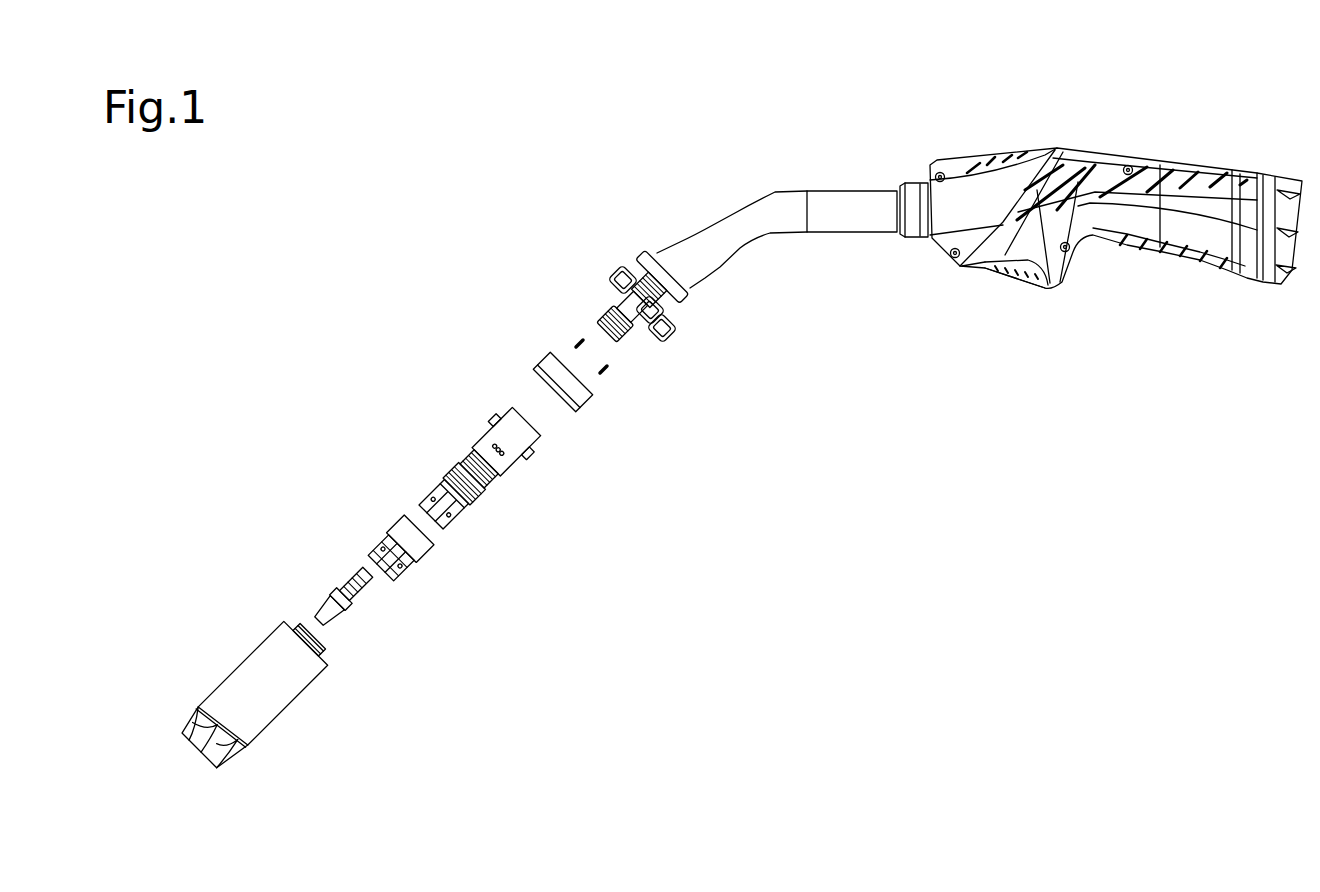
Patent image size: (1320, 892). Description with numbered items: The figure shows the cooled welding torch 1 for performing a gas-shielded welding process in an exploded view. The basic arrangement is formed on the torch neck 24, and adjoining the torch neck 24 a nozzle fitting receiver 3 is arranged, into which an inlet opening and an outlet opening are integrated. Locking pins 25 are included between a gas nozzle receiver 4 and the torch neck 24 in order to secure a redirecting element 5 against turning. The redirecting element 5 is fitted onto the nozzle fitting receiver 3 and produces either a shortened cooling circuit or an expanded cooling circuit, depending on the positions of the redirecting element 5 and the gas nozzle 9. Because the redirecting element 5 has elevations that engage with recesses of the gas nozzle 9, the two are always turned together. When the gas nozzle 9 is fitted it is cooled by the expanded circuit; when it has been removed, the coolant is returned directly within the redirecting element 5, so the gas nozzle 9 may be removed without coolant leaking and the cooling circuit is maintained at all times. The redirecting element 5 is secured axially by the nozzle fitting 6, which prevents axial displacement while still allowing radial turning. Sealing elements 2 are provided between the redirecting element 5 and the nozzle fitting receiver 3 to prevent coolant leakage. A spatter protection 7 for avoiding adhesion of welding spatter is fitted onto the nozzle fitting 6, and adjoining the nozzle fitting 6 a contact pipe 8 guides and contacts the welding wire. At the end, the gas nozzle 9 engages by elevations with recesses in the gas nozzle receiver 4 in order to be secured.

The cooled welding torch 1 is at (972, 512).
The sealing elements 2 is at (673, 337).
The nozzle fitting receiver 3 is at (620, 333).
The gas nozzle receiver 4 is at (557, 365).
The redirecting element 5 is at (512, 457).
The nozzle fitting 6 is at (437, 502).
The spatter protection 7 is at (420, 548).
The contact pipe 8 is at (343, 597).
The gas nozzle 9 is at (278, 698).
The torch neck 24 is at (705, 237).
The locking pins 25 is at (605, 372).